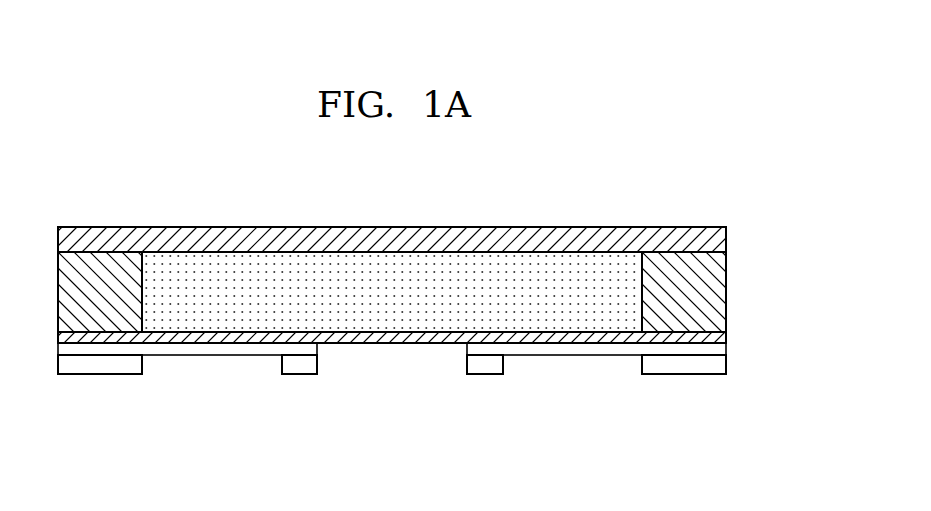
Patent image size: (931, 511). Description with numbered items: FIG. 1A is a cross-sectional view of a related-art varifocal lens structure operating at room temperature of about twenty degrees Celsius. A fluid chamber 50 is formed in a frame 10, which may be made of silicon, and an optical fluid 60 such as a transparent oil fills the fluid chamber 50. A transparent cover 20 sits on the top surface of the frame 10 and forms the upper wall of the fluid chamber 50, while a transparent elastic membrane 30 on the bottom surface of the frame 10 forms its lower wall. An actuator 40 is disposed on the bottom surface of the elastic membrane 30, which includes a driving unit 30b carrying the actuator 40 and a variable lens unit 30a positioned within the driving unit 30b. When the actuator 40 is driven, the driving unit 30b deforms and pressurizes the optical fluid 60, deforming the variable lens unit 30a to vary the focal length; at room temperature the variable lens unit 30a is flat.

The frame 10 is at (726, 295).
The transparent cover 20 is at (726, 242).
The transparent elastic membrane 30 is at (736, 341).
The variable lens unit 30a is at (390, 343).
The driving unit 30b is at (178, 340).
The actuator 40 is at (222, 362).
The fluid chamber 50 is at (406, 303).
The optical fluid 60 is at (504, 268).